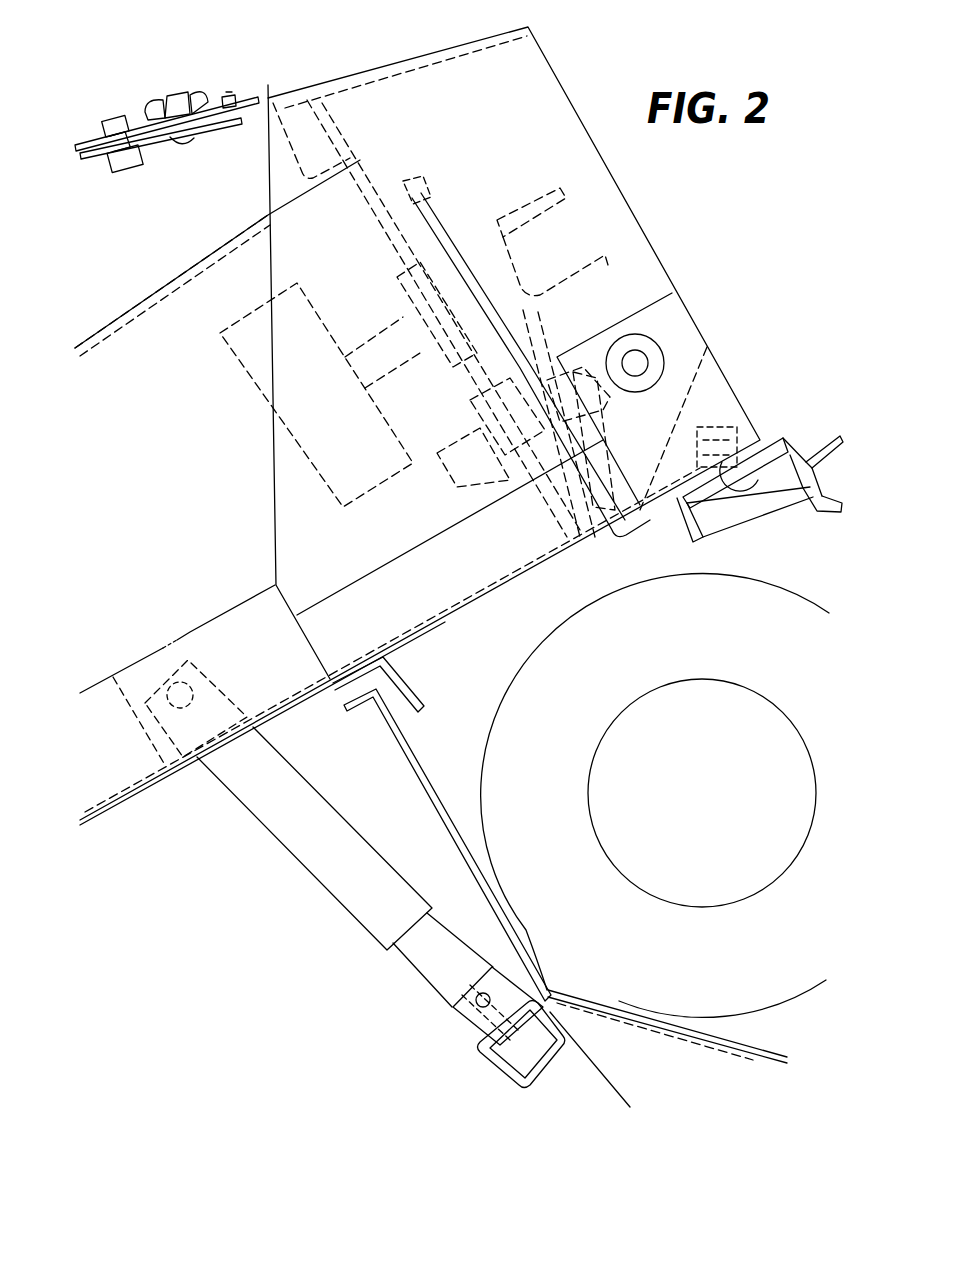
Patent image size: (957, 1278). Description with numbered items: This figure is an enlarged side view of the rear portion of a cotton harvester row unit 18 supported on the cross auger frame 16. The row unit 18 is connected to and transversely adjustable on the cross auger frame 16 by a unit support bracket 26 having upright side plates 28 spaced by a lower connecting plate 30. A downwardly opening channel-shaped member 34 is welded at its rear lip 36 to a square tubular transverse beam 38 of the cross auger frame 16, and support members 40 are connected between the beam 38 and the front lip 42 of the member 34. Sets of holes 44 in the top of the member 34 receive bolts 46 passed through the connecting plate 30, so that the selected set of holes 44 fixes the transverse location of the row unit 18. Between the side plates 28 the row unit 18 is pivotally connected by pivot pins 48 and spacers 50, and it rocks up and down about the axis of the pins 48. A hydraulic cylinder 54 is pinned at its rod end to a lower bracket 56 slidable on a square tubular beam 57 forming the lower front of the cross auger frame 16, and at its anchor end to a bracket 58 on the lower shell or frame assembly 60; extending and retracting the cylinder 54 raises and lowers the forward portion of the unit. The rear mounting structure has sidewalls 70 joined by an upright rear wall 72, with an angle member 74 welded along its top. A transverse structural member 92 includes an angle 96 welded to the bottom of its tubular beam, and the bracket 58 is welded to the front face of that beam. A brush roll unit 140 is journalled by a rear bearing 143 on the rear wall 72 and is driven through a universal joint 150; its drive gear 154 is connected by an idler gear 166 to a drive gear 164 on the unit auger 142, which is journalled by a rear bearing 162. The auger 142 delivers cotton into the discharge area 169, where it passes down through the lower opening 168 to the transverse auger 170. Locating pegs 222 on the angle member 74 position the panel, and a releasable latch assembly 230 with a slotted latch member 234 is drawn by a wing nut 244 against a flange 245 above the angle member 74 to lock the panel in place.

The cross auger frame 16 is at (708, 1082).
The row unit 18 is at (281, 26).
The unit support bracket 26 is at (738, 344).
The upright side plates 28 is at (735, 382).
The lower connecting plate 30 is at (765, 443).
The channel-shaped member 34 is at (798, 436).
The rear lip 36 is at (812, 440).
The square tubular transverse beam 38 is at (815, 505).
The support members 40 is at (775, 520).
The front lip 42 is at (684, 526).
The sets of holes 44 is at (752, 476).
The bolts 46 is at (703, 430).
The pivot pins 48 is at (635, 350).
The spacers 50 is at (662, 358).
The hydraulic cylinder 54 is at (285, 848).
The lower bracket 56 is at (462, 1028).
The square tubular beam 57 is at (560, 1062).
The bracket 58 is at (177, 760).
The lower shell or frame assembly 60 is at (105, 822).
The sidewalls 70 is at (462, 117).
The rear wall 72 is at (340, 128).
The angle member 74 is at (290, 143).
The transverse structural member 92 is at (333, 694).
The angle 96 is at (418, 694).
The brush roll unit 140 is at (318, 288).
The unit auger 142 is at (464, 432).
The rear bearing 143 is at (410, 275).
The universal joint 150 is at (548, 202).
The drive gear 154 is at (438, 193).
The rear bearing 162 is at (512, 487).
The drive gear 164 is at (592, 432).
The idler gear 166 is at (531, 365).
The lower opening 168 is at (482, 605).
The discharge area 169 is at (325, 222).
The transverse auger 170 is at (610, 598).
The locating pegs 222 is at (229, 94).
The releasable latch assembly 230 is at (164, 46).
The slotted latch member 234 is at (152, 140).
The wing nut 244 is at (192, 90).
The flange 245 is at (268, 95).